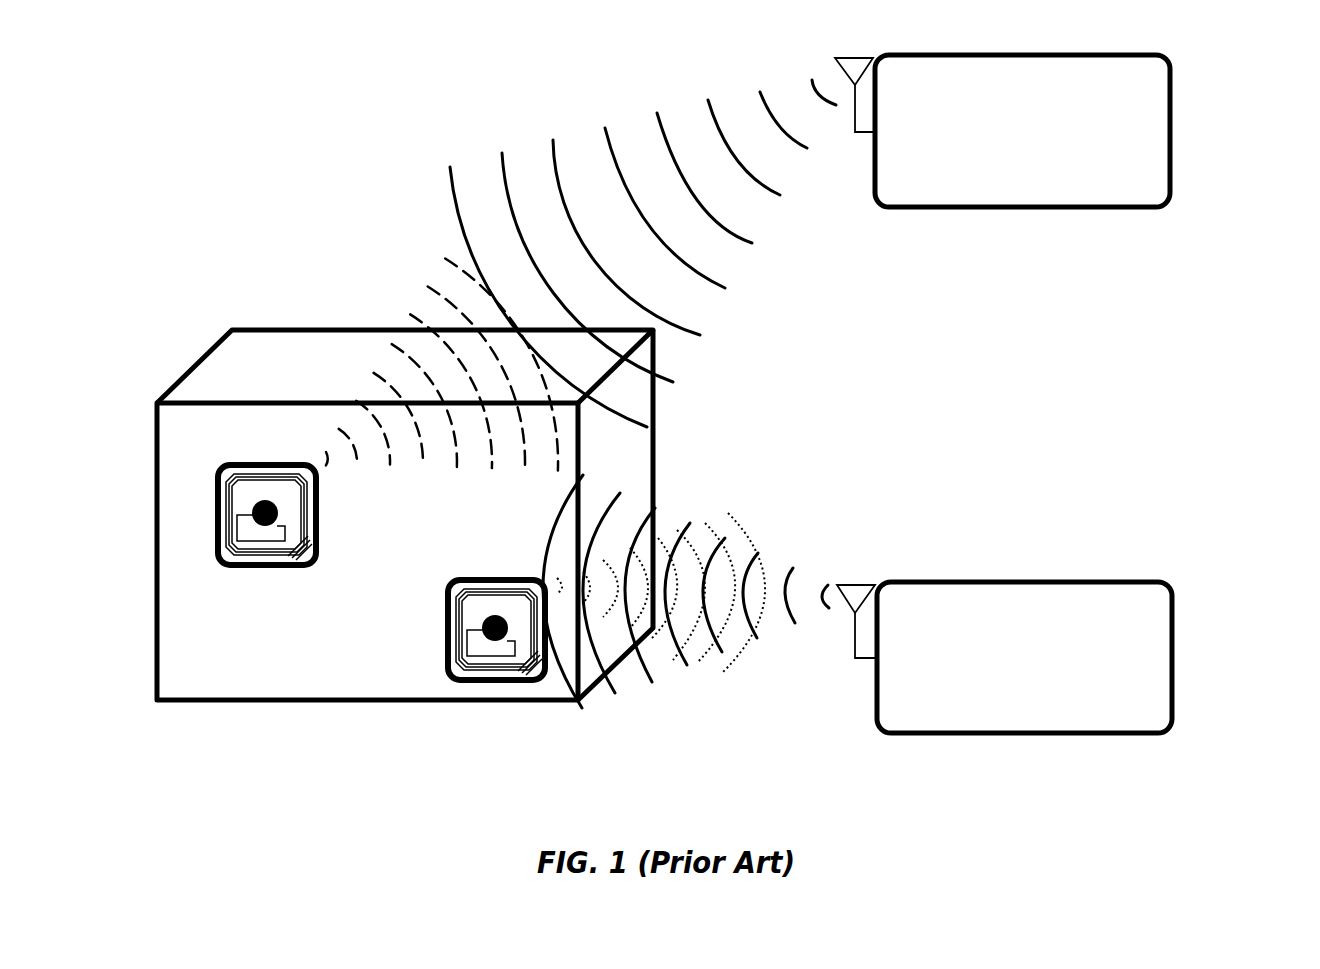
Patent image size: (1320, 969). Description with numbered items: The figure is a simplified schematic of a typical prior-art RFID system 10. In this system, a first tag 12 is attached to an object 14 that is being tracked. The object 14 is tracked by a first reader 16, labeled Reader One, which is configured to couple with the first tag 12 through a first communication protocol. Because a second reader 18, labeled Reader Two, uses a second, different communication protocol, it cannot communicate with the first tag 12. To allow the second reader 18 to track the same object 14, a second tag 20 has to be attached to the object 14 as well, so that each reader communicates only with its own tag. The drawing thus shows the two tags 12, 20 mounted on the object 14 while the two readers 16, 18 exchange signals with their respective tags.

The RFID system 10 is at (278, 146).
The first tag 12 is at (243, 472).
The object 14 is at (312, 347).
The first reader 16 is at (1157, 70).
The second reader 18 is at (1153, 602).
The second tag 20 is at (452, 670).